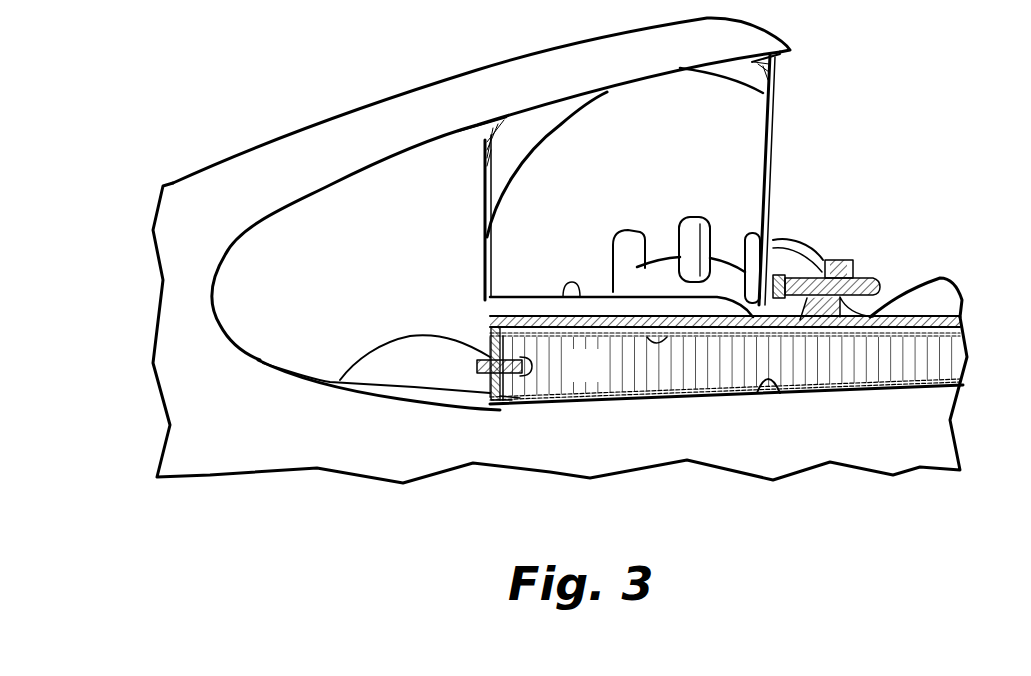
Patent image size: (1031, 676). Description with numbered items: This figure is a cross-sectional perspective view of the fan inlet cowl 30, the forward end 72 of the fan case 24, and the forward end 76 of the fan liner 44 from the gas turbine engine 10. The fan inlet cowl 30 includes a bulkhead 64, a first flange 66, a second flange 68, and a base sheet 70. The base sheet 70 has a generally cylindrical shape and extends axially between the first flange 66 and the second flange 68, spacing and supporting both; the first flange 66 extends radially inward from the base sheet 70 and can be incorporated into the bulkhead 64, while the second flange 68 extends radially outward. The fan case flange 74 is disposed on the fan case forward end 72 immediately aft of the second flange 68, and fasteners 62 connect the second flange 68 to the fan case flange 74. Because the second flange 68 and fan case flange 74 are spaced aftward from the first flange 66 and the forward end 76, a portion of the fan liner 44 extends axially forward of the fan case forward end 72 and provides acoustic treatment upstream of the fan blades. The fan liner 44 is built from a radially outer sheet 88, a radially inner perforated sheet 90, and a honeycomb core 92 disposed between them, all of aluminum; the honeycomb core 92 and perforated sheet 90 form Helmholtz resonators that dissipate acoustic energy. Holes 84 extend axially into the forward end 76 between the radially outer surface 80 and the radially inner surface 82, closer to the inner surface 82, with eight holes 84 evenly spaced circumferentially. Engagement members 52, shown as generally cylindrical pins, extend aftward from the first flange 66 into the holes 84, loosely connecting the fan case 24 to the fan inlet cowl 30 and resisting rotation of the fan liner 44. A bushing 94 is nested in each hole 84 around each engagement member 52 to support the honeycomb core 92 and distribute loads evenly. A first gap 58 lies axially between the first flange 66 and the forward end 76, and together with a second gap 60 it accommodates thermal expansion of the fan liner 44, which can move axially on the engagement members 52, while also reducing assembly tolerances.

The gas turbine engine 10 is at (203, 84).
The fan case 24 is at (920, 315).
The fan inlet cowl 30 is at (355, 420).
The fan liner 44 is at (850, 405).
The engagement members 52 is at (477, 364).
The first gap 58 is at (505, 402).
The second gap 60 is at (567, 295).
The fasteners 62 is at (880, 284).
The bulkhead 64 is at (485, 237).
The first flange 66 is at (487, 396).
The second flange 68 is at (796, 240).
The base sheet 70 is at (627, 300).
The fan case forward end 72 is at (900, 310).
The fan case flange 74 is at (836, 259).
The forward end 76 is at (507, 375).
The radially outer surface 80 is at (605, 325).
The radially inner surface 82 is at (717, 393).
The holes 84 is at (726, 326).
The radially outer sheet 88 is at (668, 332).
The radially inner perforated sheet 90 is at (783, 380).
The honeycomb core 92 is at (605, 379).
The bushings 94 is at (507, 400).